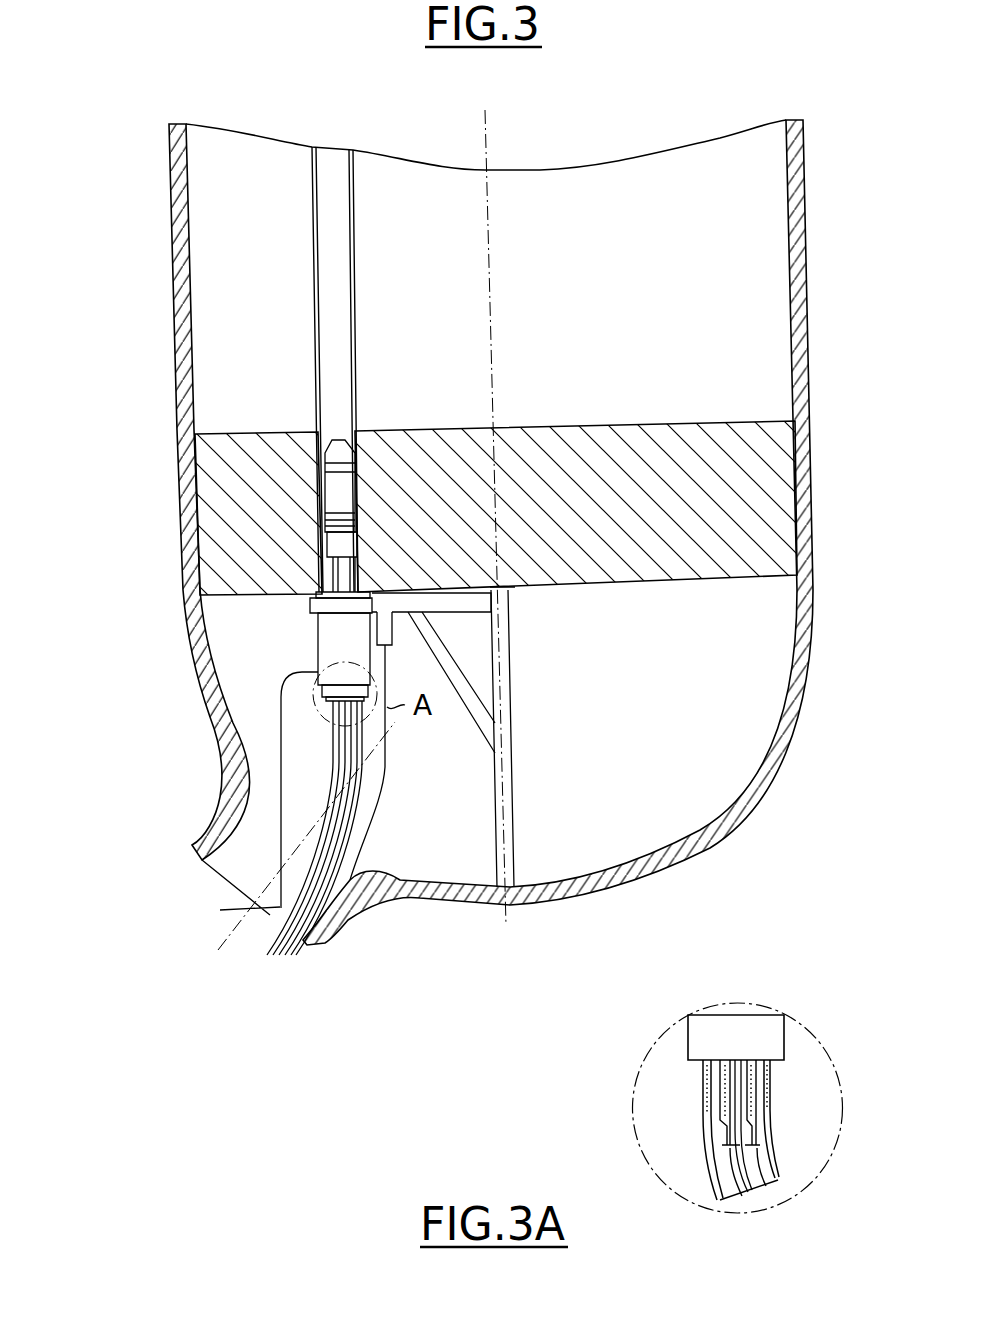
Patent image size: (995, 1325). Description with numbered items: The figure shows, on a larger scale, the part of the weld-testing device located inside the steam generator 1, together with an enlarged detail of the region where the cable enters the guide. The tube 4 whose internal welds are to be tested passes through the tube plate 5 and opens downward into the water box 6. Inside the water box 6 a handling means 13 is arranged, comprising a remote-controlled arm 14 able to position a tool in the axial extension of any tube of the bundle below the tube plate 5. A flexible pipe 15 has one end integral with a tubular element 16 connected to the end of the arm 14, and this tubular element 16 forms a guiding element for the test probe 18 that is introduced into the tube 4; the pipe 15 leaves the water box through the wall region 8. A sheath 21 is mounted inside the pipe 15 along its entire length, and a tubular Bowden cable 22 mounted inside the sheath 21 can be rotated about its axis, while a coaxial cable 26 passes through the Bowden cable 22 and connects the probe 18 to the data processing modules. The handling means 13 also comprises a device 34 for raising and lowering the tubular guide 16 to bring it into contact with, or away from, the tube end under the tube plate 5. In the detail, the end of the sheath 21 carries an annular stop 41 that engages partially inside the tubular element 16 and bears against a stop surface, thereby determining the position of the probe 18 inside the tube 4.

In FIG. 3, the vessel 1 is at (176, 328).
In FIG. 3, the tube 4 is at (312, 205).
In FIG. 3, the tube plate 5 is at (230, 515).
In FIG. 3, the water box 6 is at (243, 657).
In FIG. 3, the protective sleeve 8 is at (217, 820).
In FIG. 3, the handling means 13 is at (508, 722).
In FIG. 3, the arm 14 is at (462, 605).
In FIG. 3, the flexible pipe 15 is at (290, 963).
In FIG. 3A, the flexible pipe 15 is at (770, 1115).
In FIG. 3, the tubular element 16 is at (330, 634).
In FIG. 3A, the tubular element 16 is at (765, 1040).
In FIG. 3, the test probe 18 is at (330, 492).
In FIG. 3, the sheath 21 is at (295, 953).
In FIG. 3A, the sheath 21 is at (760, 1172).
In FIG. 3A, the Bowden cable 22 is at (745, 1193).
In FIG. 3A, the coaxial cable 26 is at (756, 1190).
In FIG. 3, the raising and lowering device 34 is at (390, 630).
In FIG. 3A, the annular stop 41 is at (720, 1105).